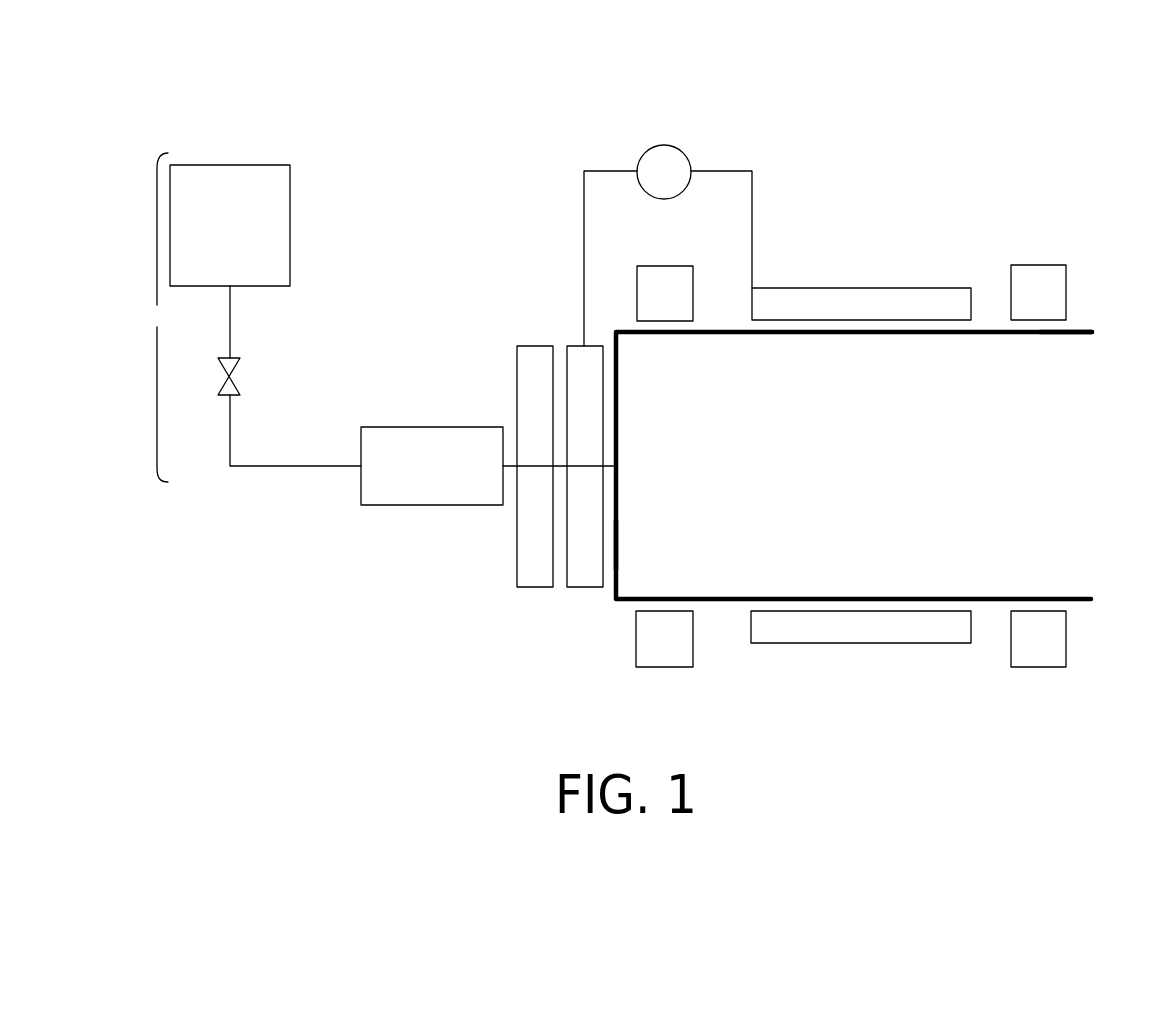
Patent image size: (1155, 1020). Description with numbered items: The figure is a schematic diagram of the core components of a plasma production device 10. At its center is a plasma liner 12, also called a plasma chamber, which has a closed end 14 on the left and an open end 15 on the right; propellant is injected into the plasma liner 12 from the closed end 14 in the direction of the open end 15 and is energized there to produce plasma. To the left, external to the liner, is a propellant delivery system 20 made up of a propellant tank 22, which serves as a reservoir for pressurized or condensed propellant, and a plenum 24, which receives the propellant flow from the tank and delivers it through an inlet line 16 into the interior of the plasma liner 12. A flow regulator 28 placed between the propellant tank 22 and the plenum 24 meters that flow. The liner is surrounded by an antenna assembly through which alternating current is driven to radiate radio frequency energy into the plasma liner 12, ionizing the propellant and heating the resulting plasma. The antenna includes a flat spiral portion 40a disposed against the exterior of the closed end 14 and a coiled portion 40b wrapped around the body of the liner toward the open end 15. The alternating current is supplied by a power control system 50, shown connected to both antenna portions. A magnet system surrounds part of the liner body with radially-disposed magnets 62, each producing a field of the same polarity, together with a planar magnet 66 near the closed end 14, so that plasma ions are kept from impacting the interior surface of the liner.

The plasma production device 10 is at (955, 146).
The plasma liner 12 is at (984, 604).
The closed end 14 is at (620, 546).
The open end 15 is at (1073, 364).
The gas inlet line 16 is at (617, 466).
The propellant delivery system 20 is at (157, 305).
The propellant tank 22 is at (243, 165).
The plenum 24 is at (421, 427).
The flow regulator 28 is at (240, 386).
The flat spiral portion 40a is at (576, 346).
The coiled portion 40b is at (853, 288).
The power control system 50 is at (662, 145).
The radially-disposed magnets 62 is at (657, 266).
The planar magnet 66 is at (535, 587).